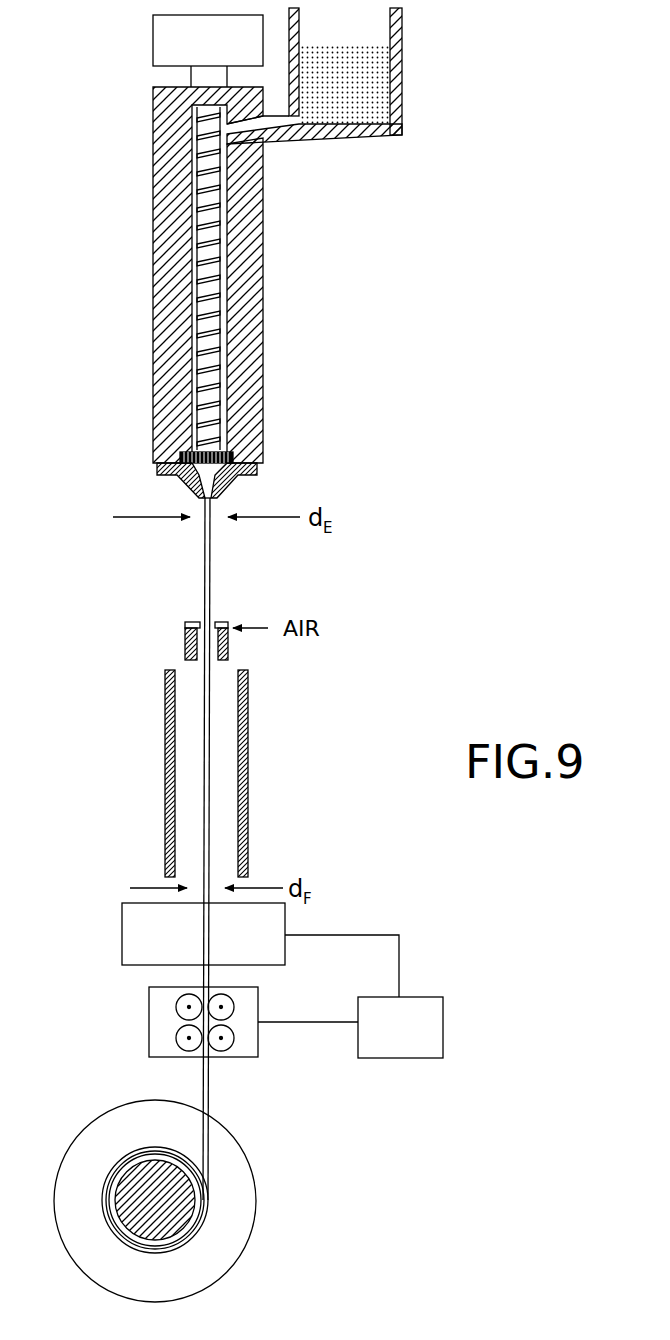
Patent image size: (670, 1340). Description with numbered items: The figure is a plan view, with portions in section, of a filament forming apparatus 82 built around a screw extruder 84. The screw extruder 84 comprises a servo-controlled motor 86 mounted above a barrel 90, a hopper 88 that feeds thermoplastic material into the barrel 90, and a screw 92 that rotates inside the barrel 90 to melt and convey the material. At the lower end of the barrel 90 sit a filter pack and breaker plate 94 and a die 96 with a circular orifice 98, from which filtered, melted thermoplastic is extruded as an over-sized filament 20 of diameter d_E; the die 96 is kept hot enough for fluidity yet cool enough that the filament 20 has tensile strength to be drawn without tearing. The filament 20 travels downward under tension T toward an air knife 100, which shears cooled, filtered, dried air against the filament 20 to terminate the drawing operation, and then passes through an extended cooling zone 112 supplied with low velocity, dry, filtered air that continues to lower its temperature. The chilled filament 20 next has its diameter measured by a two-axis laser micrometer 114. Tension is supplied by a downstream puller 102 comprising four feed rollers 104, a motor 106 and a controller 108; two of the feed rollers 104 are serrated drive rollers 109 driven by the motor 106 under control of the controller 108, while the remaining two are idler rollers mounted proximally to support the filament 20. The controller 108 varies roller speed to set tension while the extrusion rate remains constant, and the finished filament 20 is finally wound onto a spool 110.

The filament forming apparatus 82 is at (118, 125).
The screw extruder 84 is at (260, 194).
The servo-controlled motor 86 is at (190, 30).
The hopper 88 is at (330, 125).
The barrel 90 is at (160, 305).
The screw 92 is at (207, 212).
The filter pack and breaker plate 94 is at (260, 453).
The die 96 is at (197, 492).
The circular orifice 98 is at (216, 497).
The filament 20 is at (205, 598).
The air knife 100 is at (185, 648).
The extended cooling zone 112 is at (165, 738).
The two-axis laser micrometer 114 is at (133, 917).
The downstream puller 102 is at (148, 987).
The feed rollers 104 is at (178, 1030).
The motor 106 is at (247, 1042).
The controller 108 is at (422, 1012).
The serrated drive rollers 109 is at (178, 1013).
The spool 110 is at (108, 1155).